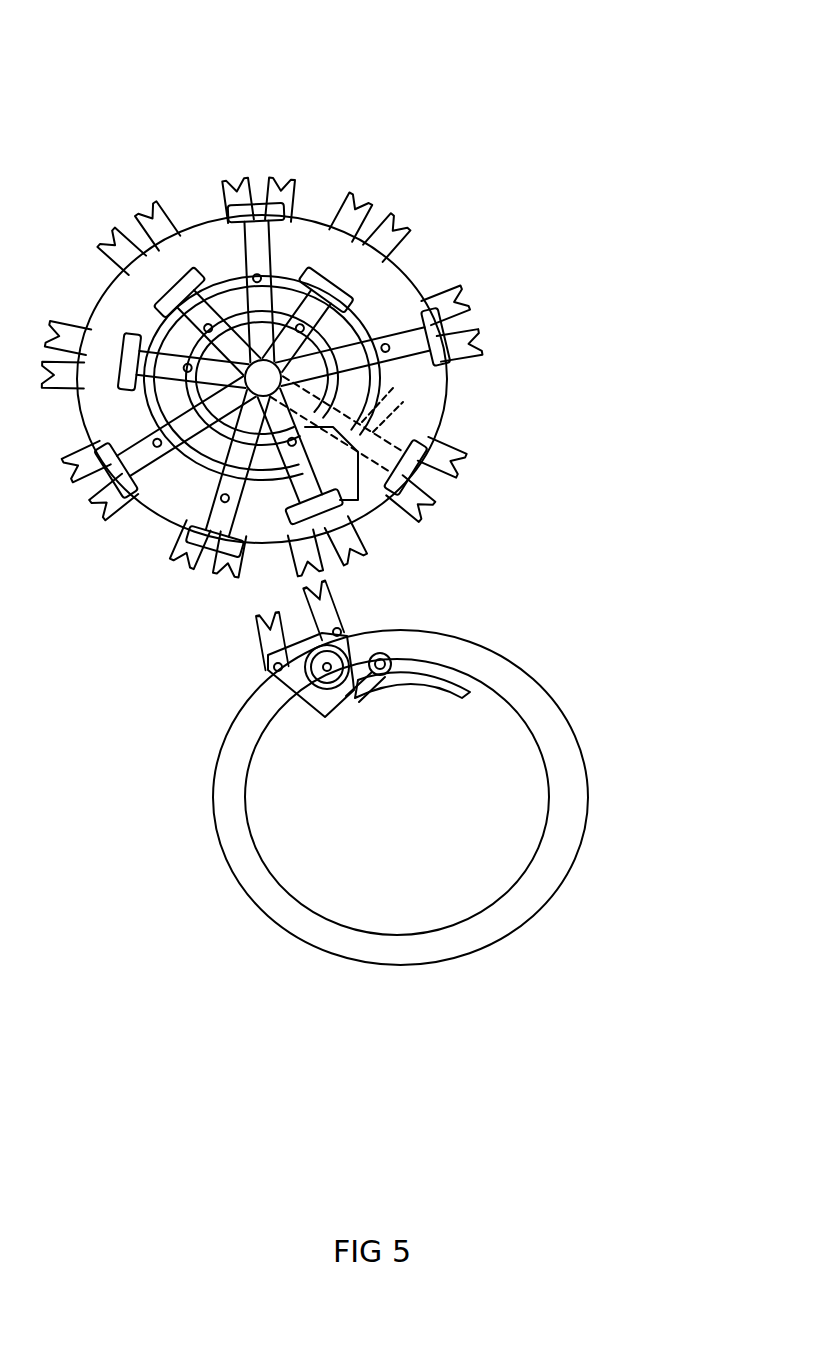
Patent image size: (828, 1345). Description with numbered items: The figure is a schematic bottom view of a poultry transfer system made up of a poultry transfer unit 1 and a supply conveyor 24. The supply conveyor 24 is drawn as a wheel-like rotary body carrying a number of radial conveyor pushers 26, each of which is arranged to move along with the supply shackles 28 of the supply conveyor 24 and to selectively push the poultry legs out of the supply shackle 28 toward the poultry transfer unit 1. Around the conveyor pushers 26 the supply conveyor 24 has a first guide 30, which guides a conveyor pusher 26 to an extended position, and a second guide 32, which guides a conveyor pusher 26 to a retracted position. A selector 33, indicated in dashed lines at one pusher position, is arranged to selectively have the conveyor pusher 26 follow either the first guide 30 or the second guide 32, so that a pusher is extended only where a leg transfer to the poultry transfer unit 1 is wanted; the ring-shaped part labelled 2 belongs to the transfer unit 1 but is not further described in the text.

The supply conveyor 24 is at (288, 321).
The conveyor pusher 26 is at (240, 243).
The first guide 30 is at (362, 302).
The second guide 32 is at (190, 343).
The selector 33 is at (396, 419).
The supply shackle 28 is at (83, 507).
The poultry transfer unit 1 is at (466, 757).
The ring 2 is at (582, 838).